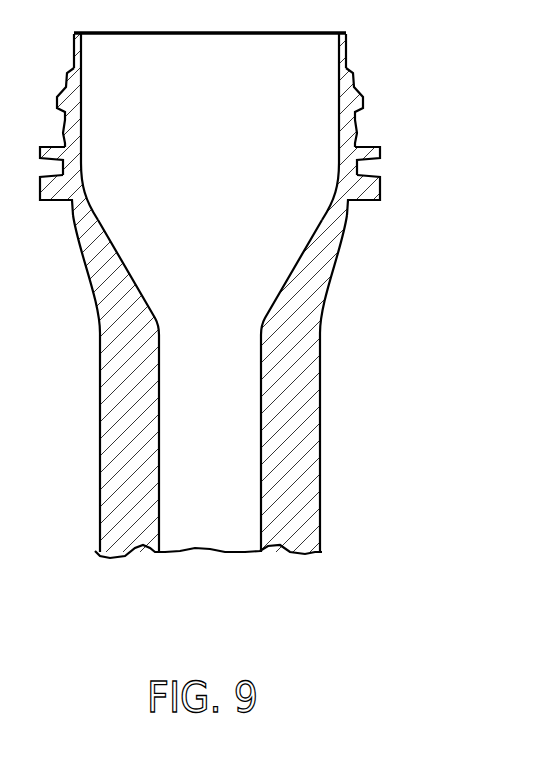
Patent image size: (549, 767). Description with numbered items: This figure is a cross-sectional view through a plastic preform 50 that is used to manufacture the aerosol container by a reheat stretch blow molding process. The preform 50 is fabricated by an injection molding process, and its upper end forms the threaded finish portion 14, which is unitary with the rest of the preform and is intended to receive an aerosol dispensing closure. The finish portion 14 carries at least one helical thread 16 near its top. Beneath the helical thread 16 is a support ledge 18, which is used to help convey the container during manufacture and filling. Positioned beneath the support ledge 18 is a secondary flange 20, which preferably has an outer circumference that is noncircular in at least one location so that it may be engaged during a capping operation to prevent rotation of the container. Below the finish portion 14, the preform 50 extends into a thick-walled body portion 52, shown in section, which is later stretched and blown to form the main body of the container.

The threaded finish portion 14 is at (265, 126).
The helical thread 16 is at (363, 88).
The support ledge 18 is at (380, 152).
The secondary flange 20 is at (382, 190).
The plastic preform 50 is at (398, 402).
The body portion 52 is at (312, 508).